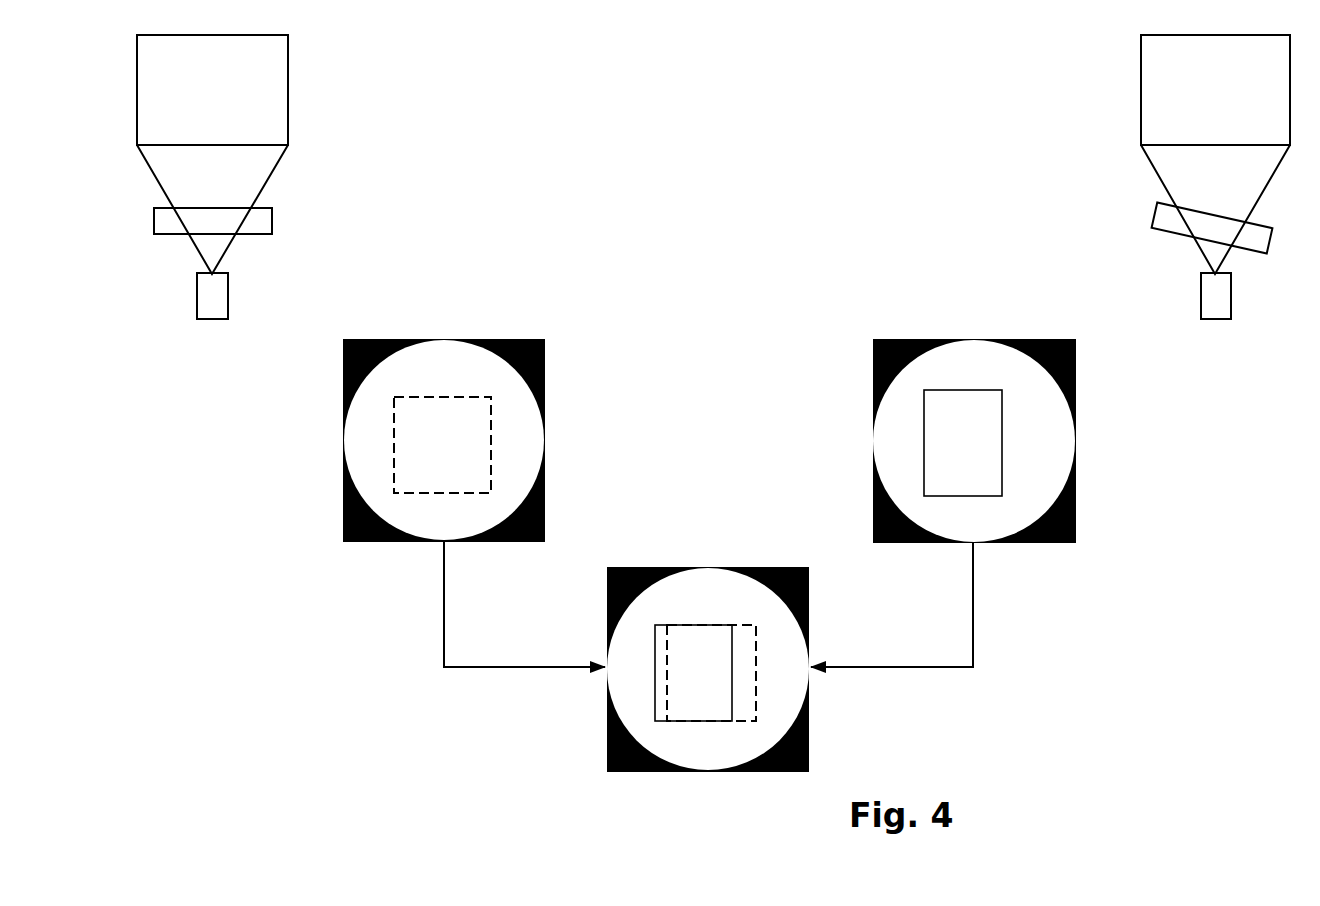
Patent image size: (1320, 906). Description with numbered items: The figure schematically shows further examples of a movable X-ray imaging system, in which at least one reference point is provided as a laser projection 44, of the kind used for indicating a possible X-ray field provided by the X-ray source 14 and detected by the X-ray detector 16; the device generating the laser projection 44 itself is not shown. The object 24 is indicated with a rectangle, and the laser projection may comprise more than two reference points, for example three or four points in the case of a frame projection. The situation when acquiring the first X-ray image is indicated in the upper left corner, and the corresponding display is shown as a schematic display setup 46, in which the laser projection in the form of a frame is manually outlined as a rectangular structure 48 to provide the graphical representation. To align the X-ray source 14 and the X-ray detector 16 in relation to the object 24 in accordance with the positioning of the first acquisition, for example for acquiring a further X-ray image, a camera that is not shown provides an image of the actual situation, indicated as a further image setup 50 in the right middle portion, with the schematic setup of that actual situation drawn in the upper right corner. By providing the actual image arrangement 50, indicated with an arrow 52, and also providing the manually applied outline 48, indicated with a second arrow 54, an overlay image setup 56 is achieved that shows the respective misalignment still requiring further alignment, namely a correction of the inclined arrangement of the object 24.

The X-ray source 14 is at (228, 297).
The X-ray detector 16 is at (288, 75).
The object 24 is at (272, 223).
The laser projection 44 is at (263, 187).
The schematic display setup 46 is at (452, 332).
The rectangular structure 48 is at (490, 437).
The further image setup 50 is at (968, 332).
The arrow 52 is at (973, 605).
The second arrow 54 is at (444, 608).
The overlay image setup 56 is at (720, 560).